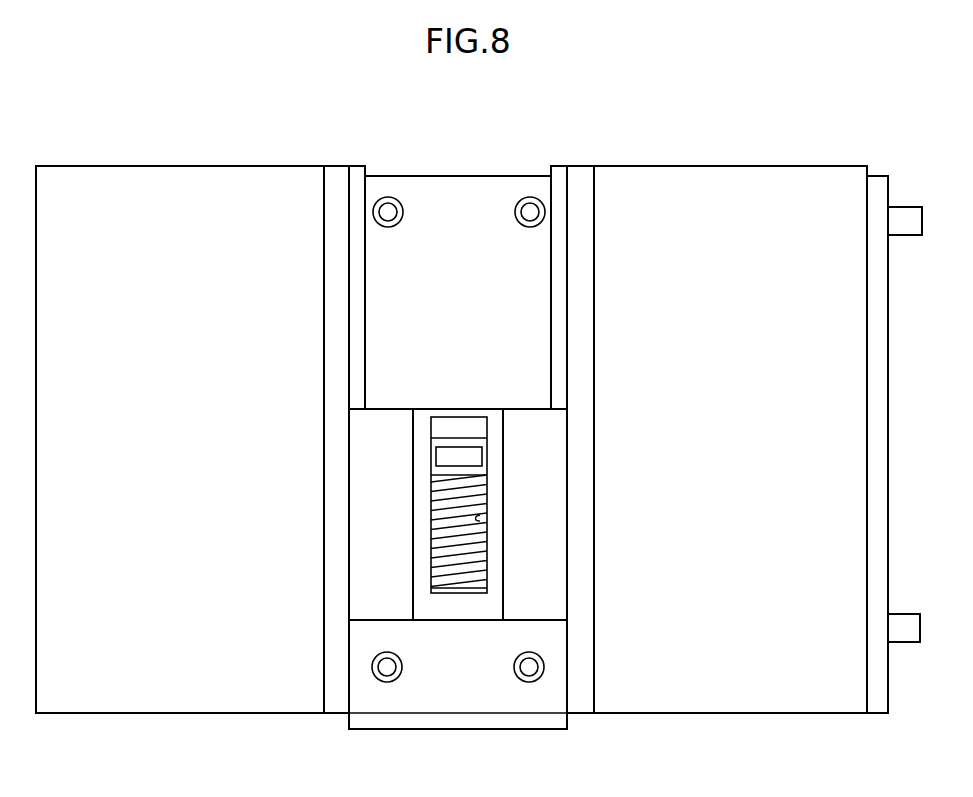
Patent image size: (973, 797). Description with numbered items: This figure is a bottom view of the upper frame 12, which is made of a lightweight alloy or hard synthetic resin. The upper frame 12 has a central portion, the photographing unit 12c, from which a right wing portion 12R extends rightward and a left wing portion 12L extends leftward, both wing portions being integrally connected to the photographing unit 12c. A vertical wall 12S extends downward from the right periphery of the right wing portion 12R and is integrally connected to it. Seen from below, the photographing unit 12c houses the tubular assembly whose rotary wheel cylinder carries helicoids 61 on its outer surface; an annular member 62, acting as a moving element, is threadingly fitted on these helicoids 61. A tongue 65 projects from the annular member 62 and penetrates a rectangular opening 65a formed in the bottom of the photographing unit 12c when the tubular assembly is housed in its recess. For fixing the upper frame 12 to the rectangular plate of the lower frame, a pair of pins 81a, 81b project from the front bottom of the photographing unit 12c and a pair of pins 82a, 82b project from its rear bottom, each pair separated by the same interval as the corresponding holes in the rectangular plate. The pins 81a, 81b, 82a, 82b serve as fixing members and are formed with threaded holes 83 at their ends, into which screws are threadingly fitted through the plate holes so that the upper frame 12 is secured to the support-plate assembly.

The upper frame 12 is at (452, 160).
The left wing portion 12L is at (188, 428).
The right wing portion 12R is at (746, 428).
The vertical wall 12S is at (883, 460).
The photographing unit 12c is at (453, 731).
The helicoids 61 is at (443, 530).
The annular member 62 is at (471, 477).
The tongue 65 is at (473, 457).
The rectangular opening 65a is at (477, 518).
The pin 81a is at (516, 657).
The pin 81b is at (400, 657).
The pin 82a is at (518, 203).
The pin 82b is at (403, 206).
The threaded holes 83 is at (388, 216).